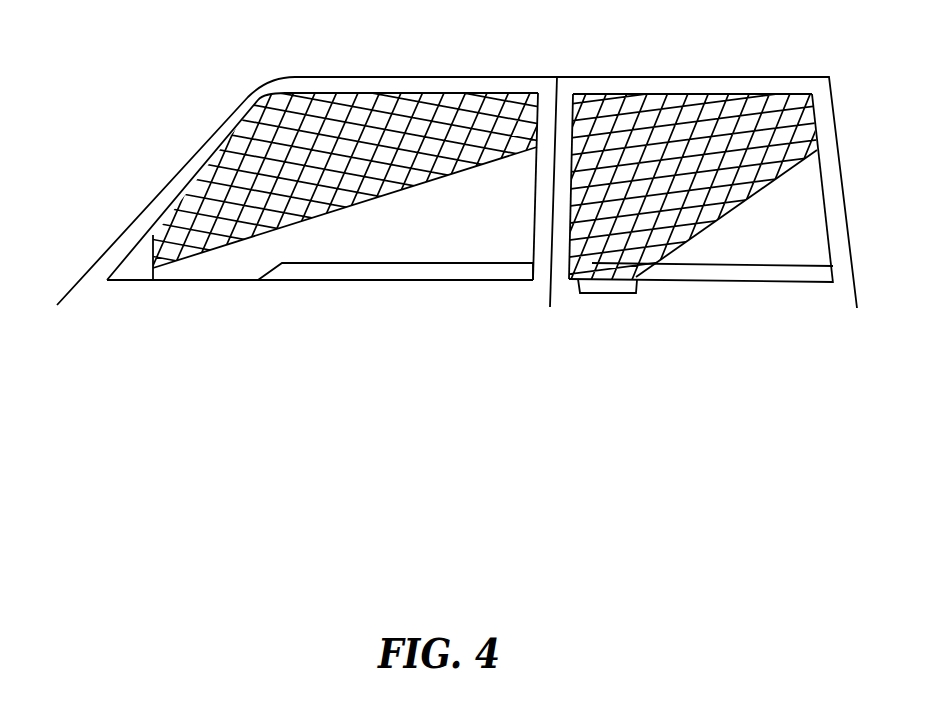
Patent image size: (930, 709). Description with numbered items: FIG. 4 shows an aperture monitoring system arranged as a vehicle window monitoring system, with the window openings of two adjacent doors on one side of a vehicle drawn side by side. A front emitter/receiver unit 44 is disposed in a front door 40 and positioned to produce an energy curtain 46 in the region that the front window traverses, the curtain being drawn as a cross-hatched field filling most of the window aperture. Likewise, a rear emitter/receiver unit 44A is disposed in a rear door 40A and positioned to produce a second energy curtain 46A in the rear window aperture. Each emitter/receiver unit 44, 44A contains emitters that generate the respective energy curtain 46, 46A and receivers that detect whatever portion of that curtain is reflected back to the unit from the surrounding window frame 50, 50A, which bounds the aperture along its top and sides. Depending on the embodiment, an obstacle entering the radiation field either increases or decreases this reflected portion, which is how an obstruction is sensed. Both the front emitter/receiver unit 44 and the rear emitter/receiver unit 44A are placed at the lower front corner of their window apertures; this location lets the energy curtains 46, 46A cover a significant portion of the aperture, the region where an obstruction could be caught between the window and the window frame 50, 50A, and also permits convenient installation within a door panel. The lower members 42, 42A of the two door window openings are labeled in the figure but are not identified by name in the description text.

The front door 40 is at (392, 393).
The bottom rail of first panel 42 is at (400, 268).
The front emitter/receiver unit 44 is at (145, 268).
The energy curtain 46 is at (293, 119).
The window frame 50 is at (458, 82).
The rear door 40A is at (797, 384).
The bottom rail of second panel 42A is at (807, 277).
The rear emitter/receiver unit 44A is at (617, 290).
The second energy curtain 46A is at (793, 115).
The window frame 50A is at (670, 87).